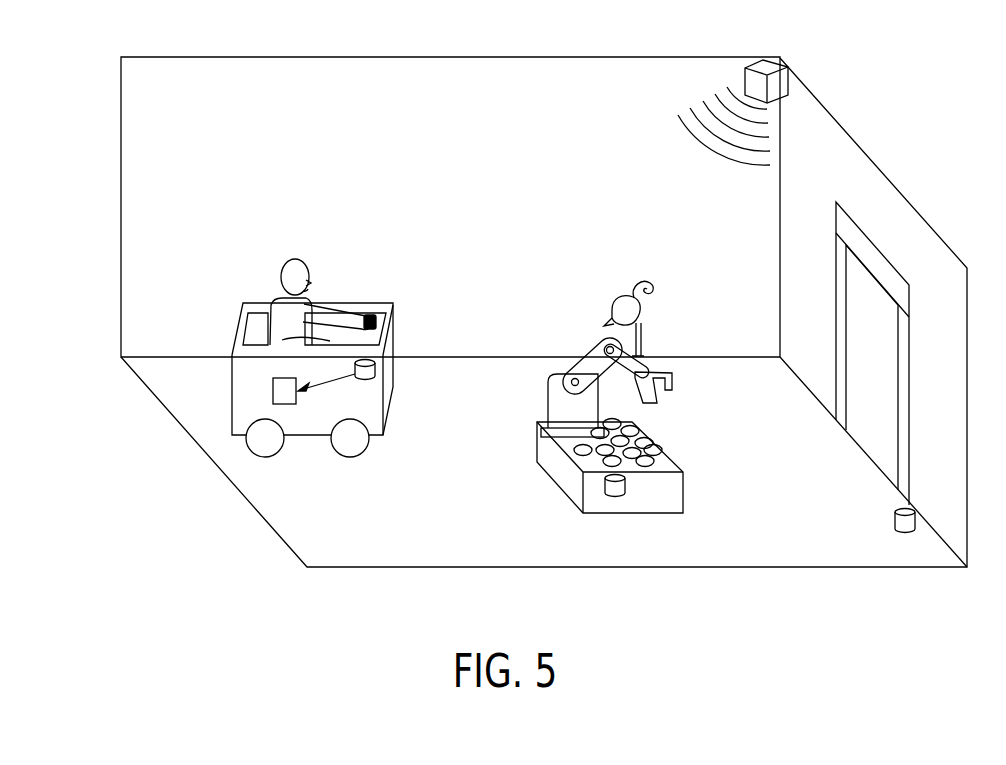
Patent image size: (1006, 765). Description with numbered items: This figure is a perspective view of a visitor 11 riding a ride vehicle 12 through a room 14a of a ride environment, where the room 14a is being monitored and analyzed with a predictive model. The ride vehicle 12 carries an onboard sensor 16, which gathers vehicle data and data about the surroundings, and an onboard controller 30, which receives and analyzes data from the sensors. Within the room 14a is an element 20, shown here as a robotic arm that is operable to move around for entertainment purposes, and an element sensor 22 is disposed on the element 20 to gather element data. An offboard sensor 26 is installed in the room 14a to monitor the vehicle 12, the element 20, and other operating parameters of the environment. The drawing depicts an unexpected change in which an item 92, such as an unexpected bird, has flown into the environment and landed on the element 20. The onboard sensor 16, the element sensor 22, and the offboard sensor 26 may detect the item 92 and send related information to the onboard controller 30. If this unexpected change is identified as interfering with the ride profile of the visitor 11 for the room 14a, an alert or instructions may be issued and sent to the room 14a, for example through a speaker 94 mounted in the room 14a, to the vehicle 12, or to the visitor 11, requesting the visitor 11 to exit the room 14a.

The room 14a is at (121, 190).
The visitor 11 is at (272, 297).
The ride vehicle 12 is at (232, 390).
The onboard sensor 16 is at (369, 381).
The onboard controller 30 is at (286, 406).
The element 20 is at (582, 347).
The item 92 is at (667, 298).
The element sensor 22 is at (615, 497).
The offboard sensor 26 is at (895, 515).
The speaker 94 is at (768, 64).